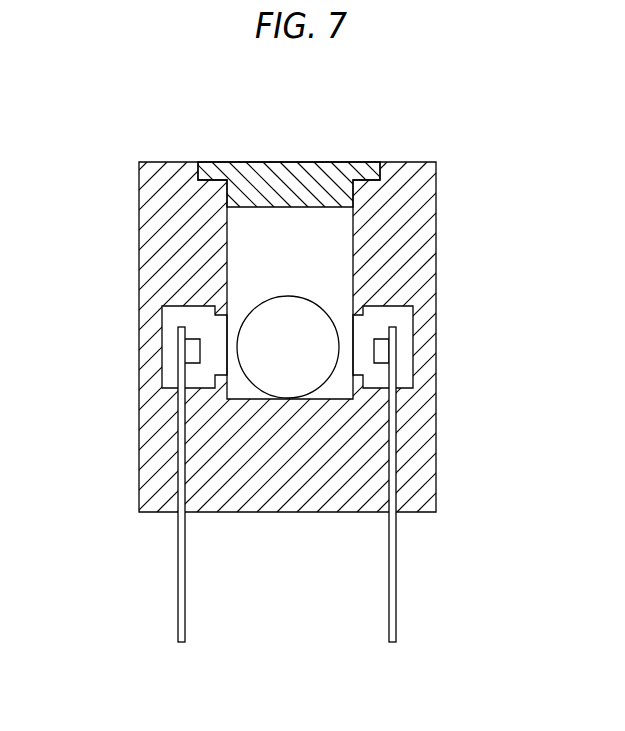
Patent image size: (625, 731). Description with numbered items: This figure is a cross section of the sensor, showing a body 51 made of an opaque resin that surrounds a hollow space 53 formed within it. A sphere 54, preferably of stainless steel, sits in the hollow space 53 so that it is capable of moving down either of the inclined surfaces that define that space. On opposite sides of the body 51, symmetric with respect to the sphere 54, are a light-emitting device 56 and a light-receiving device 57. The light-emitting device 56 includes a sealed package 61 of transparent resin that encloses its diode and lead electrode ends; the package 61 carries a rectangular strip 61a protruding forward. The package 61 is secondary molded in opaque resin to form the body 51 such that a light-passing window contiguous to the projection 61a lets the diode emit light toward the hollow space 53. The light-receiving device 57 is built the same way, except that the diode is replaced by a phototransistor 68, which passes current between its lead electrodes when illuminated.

The body 51 is at (398, 240).
The hollow space 53 is at (276, 240).
The sphere 54 is at (283, 323).
The light-emitting device 56 is at (150, 387).
The light-receiving device 57 is at (428, 357).
The sealed package 61 is at (172, 345).
The rectangular strip 61a is at (220, 380).
The phototransistor 68 is at (381, 328).